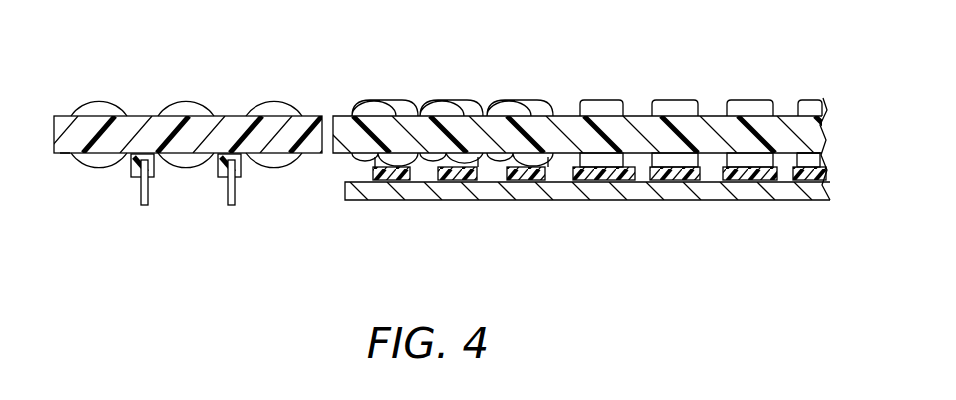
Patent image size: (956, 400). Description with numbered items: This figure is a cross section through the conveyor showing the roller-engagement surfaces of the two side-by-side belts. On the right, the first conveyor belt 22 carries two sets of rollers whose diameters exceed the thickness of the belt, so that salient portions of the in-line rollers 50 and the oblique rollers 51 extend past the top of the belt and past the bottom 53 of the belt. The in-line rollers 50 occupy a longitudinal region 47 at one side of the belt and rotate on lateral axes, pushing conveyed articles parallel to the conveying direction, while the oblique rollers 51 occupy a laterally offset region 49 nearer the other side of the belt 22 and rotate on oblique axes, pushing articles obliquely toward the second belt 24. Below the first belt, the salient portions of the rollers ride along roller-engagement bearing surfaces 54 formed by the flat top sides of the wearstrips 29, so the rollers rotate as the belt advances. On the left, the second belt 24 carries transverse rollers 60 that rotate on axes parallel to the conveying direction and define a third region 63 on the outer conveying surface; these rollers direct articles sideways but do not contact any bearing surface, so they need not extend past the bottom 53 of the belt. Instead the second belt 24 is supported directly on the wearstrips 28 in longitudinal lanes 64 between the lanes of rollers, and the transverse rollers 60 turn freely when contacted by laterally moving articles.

The first conveyor belt 22 is at (712, 114).
The second belt 24 is at (66, 137).
The wearstrip 28 is at (133, 168).
The wearstrip 29 is at (692, 170).
The longitudinal region 47 is at (812, 59).
The laterally offset region 49 is at (355, 59).
The in-line roller 50 is at (660, 106).
The oblique roller 51 is at (463, 105).
The bottom side of the belt 53 is at (63, 154).
The roller-engagement bearing surface 54 is at (385, 162).
The transverse roller 60 is at (192, 104).
The third region 63 is at (318, 59).
The longitudinal lane 64 is at (224, 158).